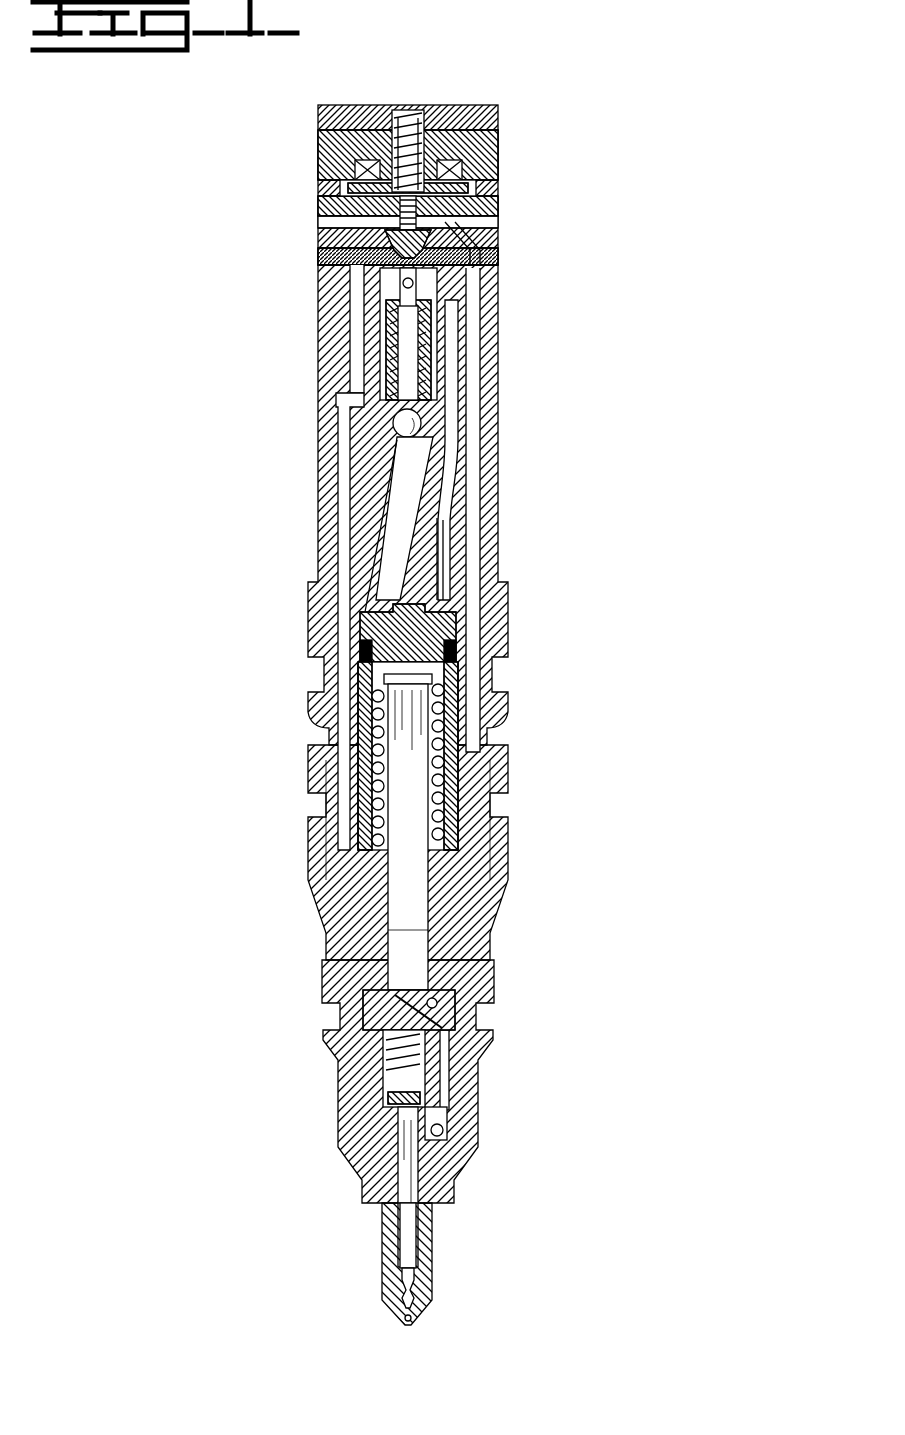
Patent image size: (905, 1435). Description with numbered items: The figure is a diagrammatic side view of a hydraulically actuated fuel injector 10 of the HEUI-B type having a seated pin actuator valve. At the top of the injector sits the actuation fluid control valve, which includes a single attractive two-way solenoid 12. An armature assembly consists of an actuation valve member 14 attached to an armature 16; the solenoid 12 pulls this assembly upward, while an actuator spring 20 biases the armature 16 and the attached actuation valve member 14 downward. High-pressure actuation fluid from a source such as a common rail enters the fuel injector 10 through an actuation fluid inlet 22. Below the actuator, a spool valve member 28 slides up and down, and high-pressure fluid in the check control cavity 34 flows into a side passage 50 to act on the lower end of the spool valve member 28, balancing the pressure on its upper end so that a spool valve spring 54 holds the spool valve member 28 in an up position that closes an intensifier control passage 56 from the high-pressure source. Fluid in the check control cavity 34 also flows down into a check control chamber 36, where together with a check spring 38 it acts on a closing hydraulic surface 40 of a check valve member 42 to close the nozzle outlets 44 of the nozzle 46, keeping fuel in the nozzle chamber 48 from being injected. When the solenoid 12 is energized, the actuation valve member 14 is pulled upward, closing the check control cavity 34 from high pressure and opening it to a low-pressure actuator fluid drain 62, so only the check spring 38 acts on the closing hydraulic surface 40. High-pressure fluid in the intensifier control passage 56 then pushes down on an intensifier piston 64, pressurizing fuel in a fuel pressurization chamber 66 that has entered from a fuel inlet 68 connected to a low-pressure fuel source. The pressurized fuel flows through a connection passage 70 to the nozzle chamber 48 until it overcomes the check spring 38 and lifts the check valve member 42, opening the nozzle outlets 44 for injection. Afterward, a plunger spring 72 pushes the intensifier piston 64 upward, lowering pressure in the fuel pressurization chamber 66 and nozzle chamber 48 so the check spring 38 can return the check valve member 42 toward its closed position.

The fuel injector 10 is at (231, 494).
The two-way solenoid 12 is at (480, 163).
The actuation valve member 14 is at (452, 254).
The armature 16 is at (355, 163).
The actuator spring 20 is at (416, 115).
The actuation fluid inlet 22 is at (482, 748).
The spool valve member 28 is at (424, 306).
The check control cavity 34 is at (350, 348).
The check control chamber 36 is at (440, 1012).
The check spring 38 is at (366, 1038).
The closing hydraulic surface 40 is at (440, 1045).
The check valve member 42 is at (404, 1172).
The nozzle outlets 44 is at (412, 1325).
The nozzle 46 is at (426, 1240).
The nozzle chamber 48 is at (455, 1166).
The side passage 50 is at (352, 369).
The spool valve spring 54 is at (440, 348).
The intensifier control passage 56 is at (455, 386).
The low-pressure actuator fluid drain 62 is at (340, 258).
The intensifier piston 64 is at (428, 640).
The fuel pressurization chamber 66 is at (405, 957).
The fuel inlet 68 is at (330, 952).
The connection passage 70 is at (450, 1100).
The plunger spring 72 is at (455, 824).